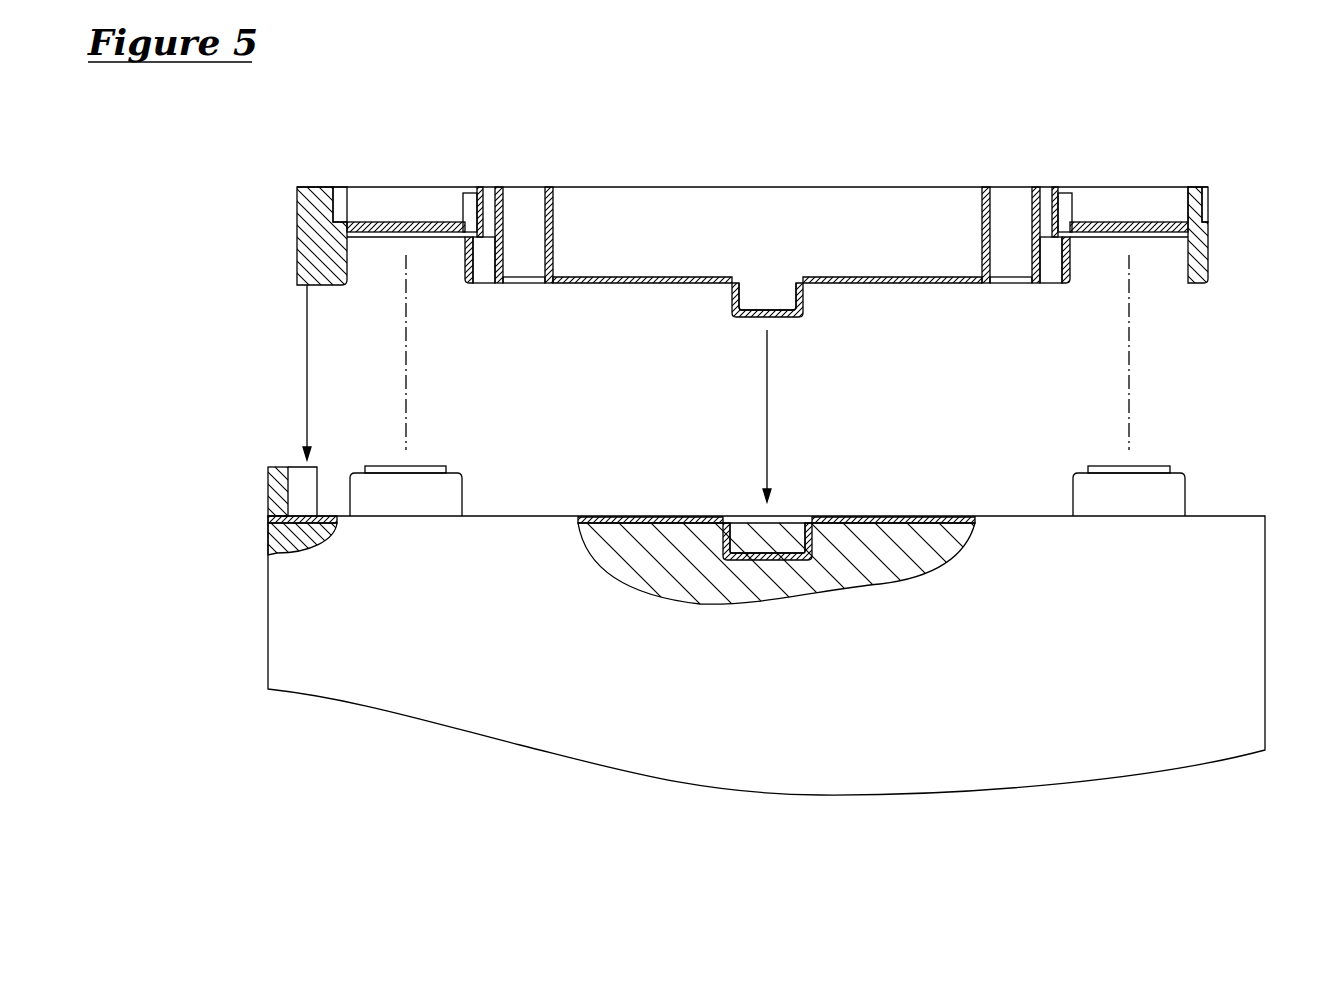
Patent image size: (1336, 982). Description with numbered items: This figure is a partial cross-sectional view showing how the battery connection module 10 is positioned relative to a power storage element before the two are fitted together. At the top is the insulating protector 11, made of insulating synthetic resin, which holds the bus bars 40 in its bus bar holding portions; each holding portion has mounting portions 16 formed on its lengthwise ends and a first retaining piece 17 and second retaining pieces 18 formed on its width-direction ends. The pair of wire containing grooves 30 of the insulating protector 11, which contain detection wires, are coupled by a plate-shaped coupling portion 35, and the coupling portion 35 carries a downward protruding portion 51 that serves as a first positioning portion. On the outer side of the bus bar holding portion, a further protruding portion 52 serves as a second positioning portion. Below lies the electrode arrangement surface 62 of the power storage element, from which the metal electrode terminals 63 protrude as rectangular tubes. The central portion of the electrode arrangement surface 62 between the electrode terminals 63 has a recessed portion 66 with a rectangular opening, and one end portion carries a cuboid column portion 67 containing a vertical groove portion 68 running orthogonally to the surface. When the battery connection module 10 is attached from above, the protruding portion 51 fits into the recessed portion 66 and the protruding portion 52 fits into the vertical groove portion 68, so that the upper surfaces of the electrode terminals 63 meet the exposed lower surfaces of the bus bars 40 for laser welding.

The battery connection module 10 is at (1226, 143).
The insulating protector 11 is at (1200, 243).
The mounting portion 16 is at (1162, 240).
The first retaining piece 17 is at (1185, 218).
The second retaining piece 18 is at (1090, 212).
The wire containing groove 30 is at (507, 215).
The coupling portion 35 is at (931, 275).
The bus bar 40 is at (415, 222).
The protruding portion 51 is at (805, 307).
The protruding portion 52 is at (297, 225).
The electrode arrangement surface 62 is at (1013, 515).
The electrode terminal 63 is at (447, 495).
The recessed portion 66 is at (800, 540).
The column portion 67 is at (270, 495).
The vertical groove portion 68 is at (303, 490).